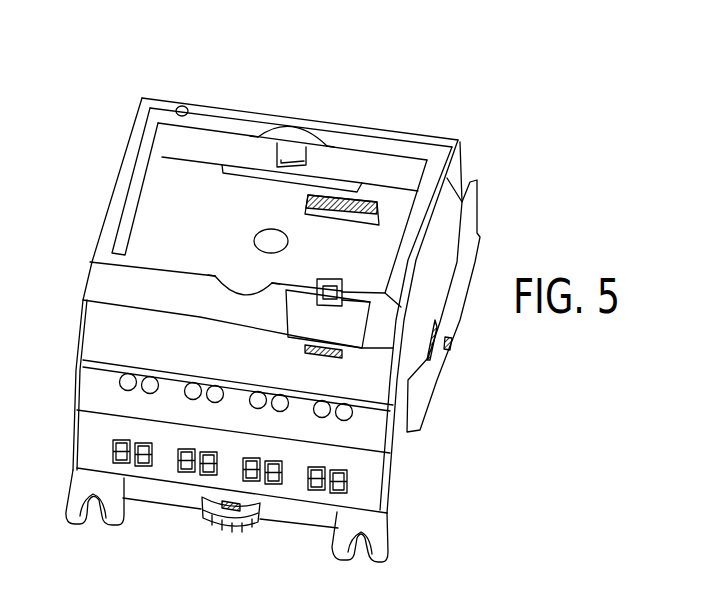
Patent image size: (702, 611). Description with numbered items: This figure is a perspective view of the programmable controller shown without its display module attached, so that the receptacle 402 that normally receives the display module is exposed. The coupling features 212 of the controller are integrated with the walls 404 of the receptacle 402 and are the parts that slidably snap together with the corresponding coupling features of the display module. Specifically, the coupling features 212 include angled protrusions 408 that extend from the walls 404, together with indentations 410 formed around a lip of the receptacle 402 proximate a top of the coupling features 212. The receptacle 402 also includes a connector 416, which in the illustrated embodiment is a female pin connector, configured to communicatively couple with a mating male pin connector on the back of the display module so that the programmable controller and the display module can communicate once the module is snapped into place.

The receptacle 402 is at (173, 193).
The walls 404 is at (400, 163).
The indentations 410 is at (275, 130).
The coupling features 212 is at (287, 113).
The angled protrusions 408 is at (293, 157).
The connector 416 is at (377, 203).